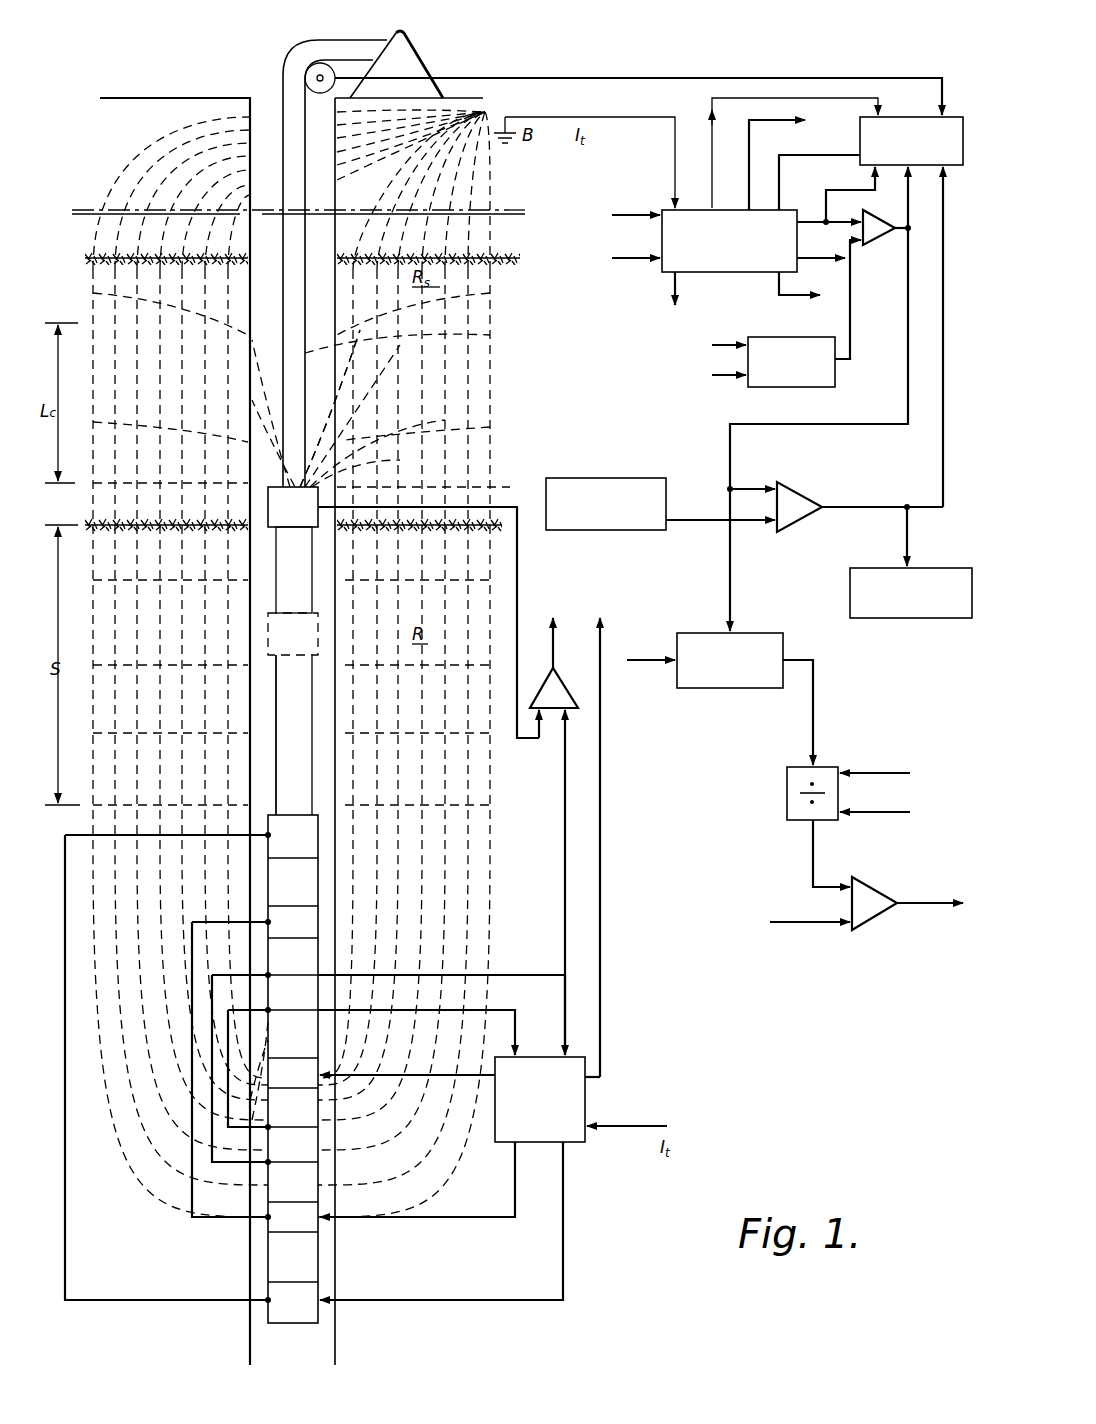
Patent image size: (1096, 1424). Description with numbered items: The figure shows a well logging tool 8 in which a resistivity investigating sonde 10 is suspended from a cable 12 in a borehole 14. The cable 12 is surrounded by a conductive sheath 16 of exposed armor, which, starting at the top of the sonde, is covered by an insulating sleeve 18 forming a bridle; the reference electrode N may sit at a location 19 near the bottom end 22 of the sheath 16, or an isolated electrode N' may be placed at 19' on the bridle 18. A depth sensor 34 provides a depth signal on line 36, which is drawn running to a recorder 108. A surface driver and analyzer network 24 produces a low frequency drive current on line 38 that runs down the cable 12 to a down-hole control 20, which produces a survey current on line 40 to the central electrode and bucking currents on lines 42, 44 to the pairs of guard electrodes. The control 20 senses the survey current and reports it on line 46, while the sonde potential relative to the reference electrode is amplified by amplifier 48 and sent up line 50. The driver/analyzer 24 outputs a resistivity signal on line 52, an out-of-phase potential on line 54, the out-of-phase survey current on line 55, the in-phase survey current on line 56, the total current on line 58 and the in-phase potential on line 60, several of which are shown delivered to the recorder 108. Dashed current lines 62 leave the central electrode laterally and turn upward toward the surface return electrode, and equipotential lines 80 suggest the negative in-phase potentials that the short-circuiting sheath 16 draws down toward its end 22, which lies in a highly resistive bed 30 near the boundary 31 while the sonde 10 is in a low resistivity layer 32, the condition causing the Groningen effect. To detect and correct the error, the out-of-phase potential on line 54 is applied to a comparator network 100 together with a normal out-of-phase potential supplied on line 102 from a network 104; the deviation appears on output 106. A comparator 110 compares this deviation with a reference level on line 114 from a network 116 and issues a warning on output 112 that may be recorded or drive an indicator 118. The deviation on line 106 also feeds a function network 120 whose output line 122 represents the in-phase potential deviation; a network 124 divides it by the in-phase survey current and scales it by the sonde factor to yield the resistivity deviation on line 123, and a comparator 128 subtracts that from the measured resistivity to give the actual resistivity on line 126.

The well logging tool 8 is at (774, 1018).
The resistivity investigating sonde 10 is at (320, 888).
The cable 12 is at (281, 185).
The borehole 14 is at (330, 178).
The conductive sheath 16 is at (355, 300).
The insulating sleeve 18 is at (318, 716).
The location of reference electrode N 19 is at (260, 465).
The location of isolated electrode N' 19' is at (253, 655).
The down-hole control 20 is at (575, 1144).
The bottom end of the conductive sheath 22 is at (312, 486).
The driver and analyzer network 24 is at (722, 273).
The highly resistive bed 30 is at (450, 338).
The boundary 31 is at (195, 527).
The low resistivity formation layer 32 is at (430, 611).
The depth sensor 34 is at (322, 64).
The depth signal line 36 is at (484, 78).
The drive current line 38 is at (668, 284).
The survey current line 40 is at (448, 1088).
The bucking current line 42 is at (400, 1219).
The bucking current line 44 is at (405, 1303).
The survey current signal line 46 is at (640, 262).
The amplifier 48 is at (560, 684).
The sonde potential line 50 is at (551, 648).
The resistivity signal line 52 is at (779, 163).
The out-of-phase potential line 54 is at (806, 217).
The out-of-phase current line 55 is at (812, 290).
The in-phase current line 56 is at (808, 262).
The total current line 58 is at (768, 117).
The in-phase potential line 60 is at (752, 84).
The current lines 62 is at (186, 1088).
The equipotential lines 80 is at (117, 352).
The comparator network 100 is at (880, 248).
The normal out-of-phase potential line 102 is at (852, 306).
The network 104 is at (795, 388).
The comparator output 106 is at (906, 363).
The recorder 108 is at (946, 117).
The comparator 110 is at (800, 493).
The warning signal output 112 is at (876, 505).
The reference level line 114 is at (755, 523).
The reference network 116 is at (658, 531).
The indicator 118 is at (938, 568).
The function network 120 is at (730, 690).
The function network output line 122 is at (814, 694).
The resistivity deviation line 123 is at (812, 858).
The dividing network 124 is at (785, 797).
The actual resistivity line 126 is at (920, 905).
The comparator 128 is at (880, 923).